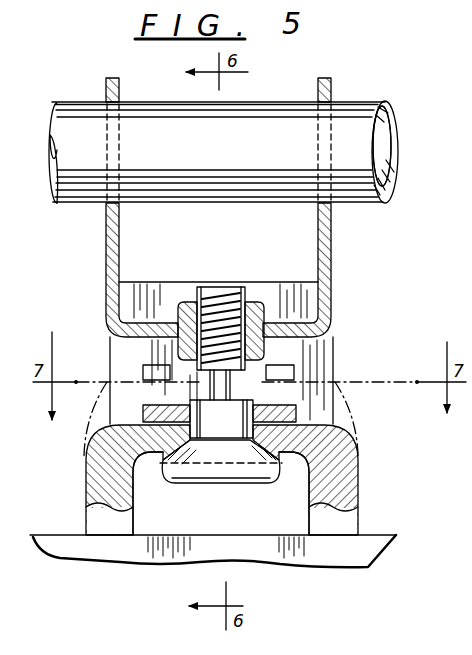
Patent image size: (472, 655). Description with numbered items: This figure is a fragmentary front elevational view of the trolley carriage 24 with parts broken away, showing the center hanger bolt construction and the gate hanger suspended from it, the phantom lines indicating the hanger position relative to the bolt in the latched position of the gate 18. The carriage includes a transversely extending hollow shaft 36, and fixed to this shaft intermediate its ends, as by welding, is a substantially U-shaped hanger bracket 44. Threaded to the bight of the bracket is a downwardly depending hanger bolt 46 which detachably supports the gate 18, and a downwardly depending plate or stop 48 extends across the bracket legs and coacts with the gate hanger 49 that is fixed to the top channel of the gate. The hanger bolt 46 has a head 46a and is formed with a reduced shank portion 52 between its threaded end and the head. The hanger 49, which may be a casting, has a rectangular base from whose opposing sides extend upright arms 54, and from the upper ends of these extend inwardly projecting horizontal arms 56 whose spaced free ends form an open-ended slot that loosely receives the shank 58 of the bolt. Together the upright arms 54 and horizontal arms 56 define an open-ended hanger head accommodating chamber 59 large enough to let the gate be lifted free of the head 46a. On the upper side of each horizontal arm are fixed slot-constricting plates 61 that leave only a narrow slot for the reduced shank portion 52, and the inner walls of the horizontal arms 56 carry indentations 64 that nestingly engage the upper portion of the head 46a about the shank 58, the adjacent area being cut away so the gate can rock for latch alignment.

The gate 18 is at (348, 553).
The trolley carriage 24 is at (360, 100).
The hollow shaft 36 is at (368, 162).
The U-shaped hanger bracket 44 is at (333, 235).
The hanger bolt 46 is at (227, 291).
The head of hanger bolt 46a is at (190, 442).
The plate or stop 48 is at (316, 344).
The gate hanger 49 is at (352, 436).
The reduced shank portion 52 is at (233, 387).
The upright arms 54 is at (97, 478).
The horizontal arms 56 is at (145, 448).
The shank 58 is at (218, 428).
The hanger head accommodating chamber 59 is at (189, 494).
The slot-constricting plates 61 is at (155, 405).
The indentations 64 is at (265, 442).